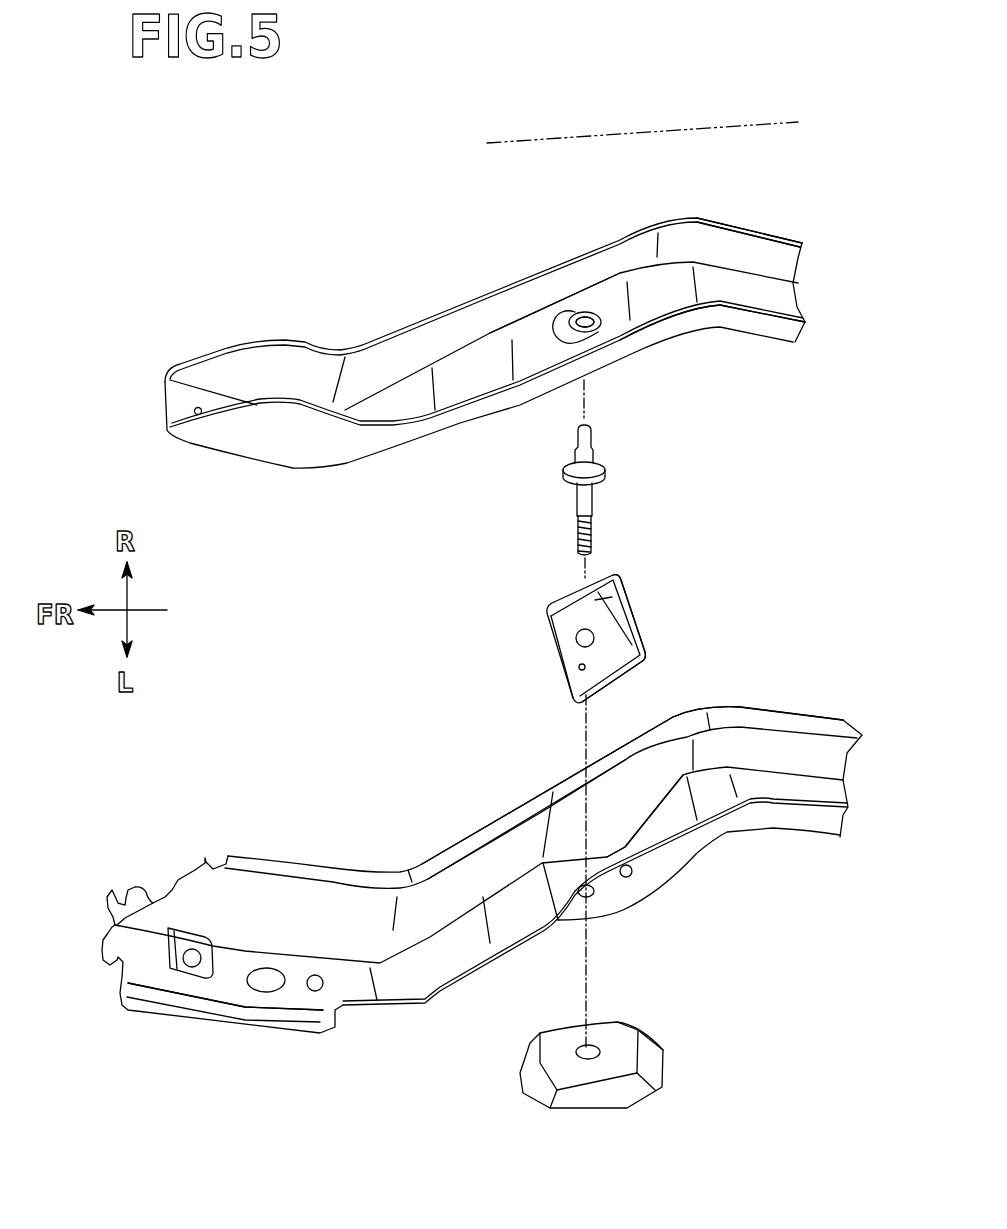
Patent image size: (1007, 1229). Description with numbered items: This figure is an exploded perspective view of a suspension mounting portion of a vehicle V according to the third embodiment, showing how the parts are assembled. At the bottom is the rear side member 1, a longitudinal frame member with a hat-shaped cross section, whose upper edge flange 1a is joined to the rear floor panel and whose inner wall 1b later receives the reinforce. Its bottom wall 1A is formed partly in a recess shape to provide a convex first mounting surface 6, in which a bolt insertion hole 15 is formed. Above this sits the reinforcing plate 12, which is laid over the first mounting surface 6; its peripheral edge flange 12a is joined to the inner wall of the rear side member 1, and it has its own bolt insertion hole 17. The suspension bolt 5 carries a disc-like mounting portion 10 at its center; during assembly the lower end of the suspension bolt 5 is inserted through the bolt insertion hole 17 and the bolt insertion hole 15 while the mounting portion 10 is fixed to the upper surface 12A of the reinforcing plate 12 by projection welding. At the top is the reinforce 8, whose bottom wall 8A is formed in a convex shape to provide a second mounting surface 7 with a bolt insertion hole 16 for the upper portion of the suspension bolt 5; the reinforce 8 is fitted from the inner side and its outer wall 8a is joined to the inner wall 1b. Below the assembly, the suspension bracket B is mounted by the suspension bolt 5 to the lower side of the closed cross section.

The rear side member 1 is at (845, 718).
The flange 1a is at (543, 940).
The inner wall 1b is at (622, 757).
The bottom wall 1A is at (407, 987).
The suspension bolt 5 is at (595, 512).
The first mounting surface 6 is at (608, 877).
The second mounting surface 7 is at (594, 332).
The reinforce 8 is at (790, 237).
The outer wall 8a is at (728, 242).
The bottom wall 8A is at (530, 343).
The mounting portion 10 is at (606, 470).
The reinforcing plate 12 is at (562, 683).
The peripheral edge flange 12a is at (612, 578).
The upper surface 12A is at (565, 652).
The bolt insertion hole 15 is at (596, 895).
The bolt insertion hole 16 is at (584, 312).
The bolt insertion hole 17 is at (596, 634).
The suspension bracket B is at (652, 1060).
The vehicle V is at (664, 122).